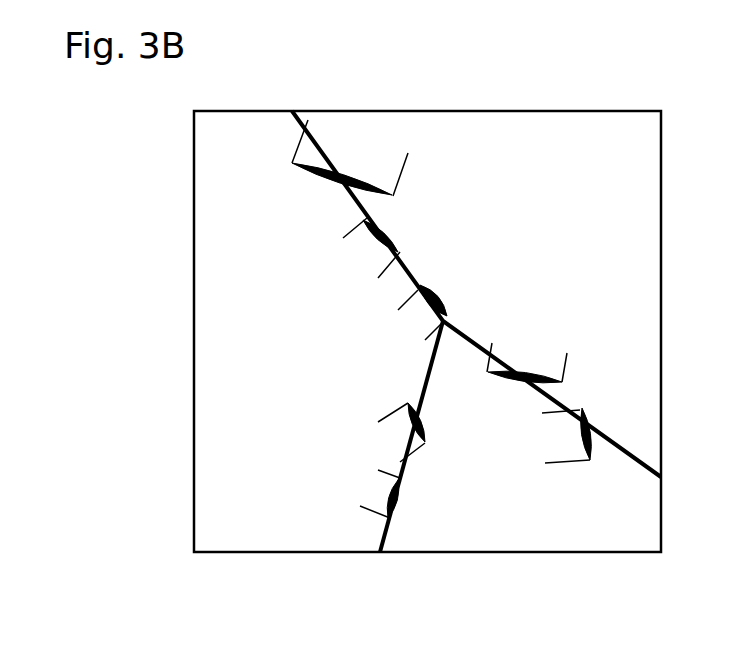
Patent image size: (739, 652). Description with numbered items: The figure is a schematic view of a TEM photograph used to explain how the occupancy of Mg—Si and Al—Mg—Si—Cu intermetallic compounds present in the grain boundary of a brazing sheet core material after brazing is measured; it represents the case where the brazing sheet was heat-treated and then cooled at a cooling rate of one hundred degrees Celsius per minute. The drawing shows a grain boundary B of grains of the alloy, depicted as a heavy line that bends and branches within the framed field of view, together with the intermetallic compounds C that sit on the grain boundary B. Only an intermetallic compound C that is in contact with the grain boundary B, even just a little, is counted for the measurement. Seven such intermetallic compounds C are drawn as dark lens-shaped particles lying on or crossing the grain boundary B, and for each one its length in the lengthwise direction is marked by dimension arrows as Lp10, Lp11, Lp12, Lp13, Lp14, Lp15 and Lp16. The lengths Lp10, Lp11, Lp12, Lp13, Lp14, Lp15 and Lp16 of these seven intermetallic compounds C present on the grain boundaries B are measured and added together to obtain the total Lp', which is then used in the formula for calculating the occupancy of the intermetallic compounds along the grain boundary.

The grain boundary B is at (637, 467).
The intermetallic compound C is at (449, 294).
The length Lp10 is at (405, 158).
The length Lp11 is at (380, 272).
The length Lp12 is at (434, 333).
The length Lp13 is at (402, 458).
The length Lp14 is at (382, 477).
The length Lp15 is at (563, 357).
The length Lp16 is at (548, 415).